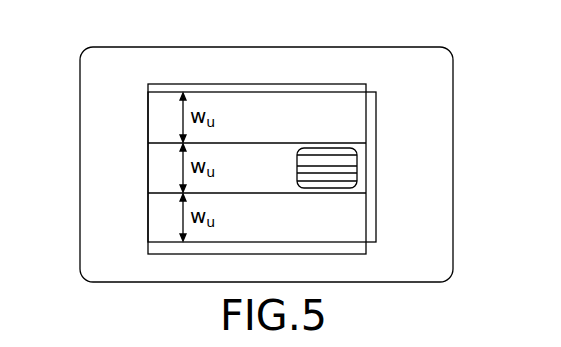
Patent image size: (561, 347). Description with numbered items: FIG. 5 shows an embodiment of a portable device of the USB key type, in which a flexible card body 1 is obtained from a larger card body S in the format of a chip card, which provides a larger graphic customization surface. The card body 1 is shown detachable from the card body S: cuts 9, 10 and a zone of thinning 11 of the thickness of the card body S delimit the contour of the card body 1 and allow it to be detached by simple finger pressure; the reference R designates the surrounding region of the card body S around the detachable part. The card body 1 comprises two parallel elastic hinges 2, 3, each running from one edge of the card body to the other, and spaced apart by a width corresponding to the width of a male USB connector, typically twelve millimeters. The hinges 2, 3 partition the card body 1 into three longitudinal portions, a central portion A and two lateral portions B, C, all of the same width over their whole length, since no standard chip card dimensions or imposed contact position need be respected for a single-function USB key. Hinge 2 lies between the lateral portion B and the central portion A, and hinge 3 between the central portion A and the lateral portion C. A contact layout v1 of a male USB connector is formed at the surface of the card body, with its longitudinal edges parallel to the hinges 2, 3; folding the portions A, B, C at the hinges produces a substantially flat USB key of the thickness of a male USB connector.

The card body in the format of a chip card S is at (80, 96).
The region R is at (80, 198).
The cut 9 is at (343, 85).
The cut 10 is at (372, 108).
The zone of thinning 11 is at (148, 153).
The card body 1 is at (148, 238).
The elastic hinge 2 is at (232, 143).
The elastic hinge 3 is at (232, 193).
The central portion A is at (257, 168).
The lateral portion B is at (275, 116).
The lateral portion C is at (257, 217).
The contact layout v1 is at (312, 190).